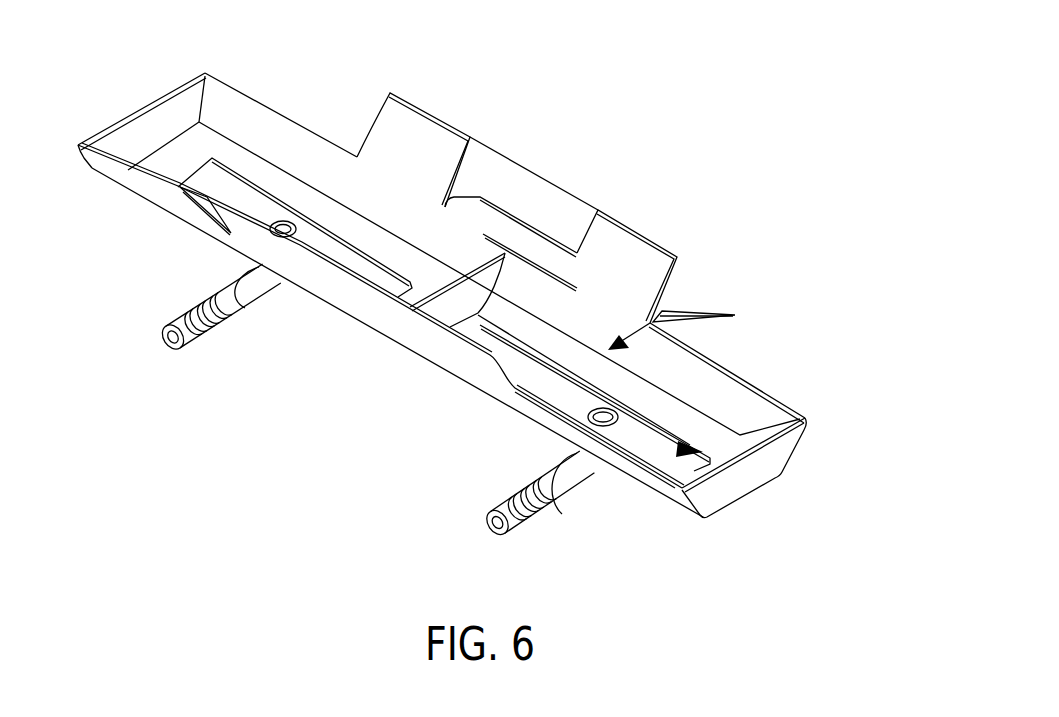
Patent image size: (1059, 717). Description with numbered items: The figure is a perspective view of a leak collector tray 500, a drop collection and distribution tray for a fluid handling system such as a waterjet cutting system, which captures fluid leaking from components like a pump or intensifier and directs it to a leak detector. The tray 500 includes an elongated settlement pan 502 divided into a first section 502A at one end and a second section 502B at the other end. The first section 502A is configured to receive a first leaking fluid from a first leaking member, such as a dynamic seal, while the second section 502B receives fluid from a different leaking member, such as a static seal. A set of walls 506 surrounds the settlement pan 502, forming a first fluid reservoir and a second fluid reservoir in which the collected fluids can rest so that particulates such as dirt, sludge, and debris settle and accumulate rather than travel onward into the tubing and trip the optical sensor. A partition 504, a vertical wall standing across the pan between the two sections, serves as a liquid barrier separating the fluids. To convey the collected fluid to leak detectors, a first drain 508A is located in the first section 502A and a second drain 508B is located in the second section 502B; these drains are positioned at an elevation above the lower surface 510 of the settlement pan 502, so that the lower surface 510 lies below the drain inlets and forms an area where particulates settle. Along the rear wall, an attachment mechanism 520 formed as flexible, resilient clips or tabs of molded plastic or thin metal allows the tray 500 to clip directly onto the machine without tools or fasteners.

The leak collector tray 500 is at (700, 74).
The settlement pan 502 is at (163, 198).
The first section 502A is at (178, 125).
The second section 502B is at (658, 316).
The partition 504 is at (485, 280).
The walls 506 is at (130, 146).
The first drain 508A is at (280, 221).
The second drain 508B is at (619, 414).
The lower surface 510 is at (196, 166).
The attachment mechanism 520 is at (407, 160).